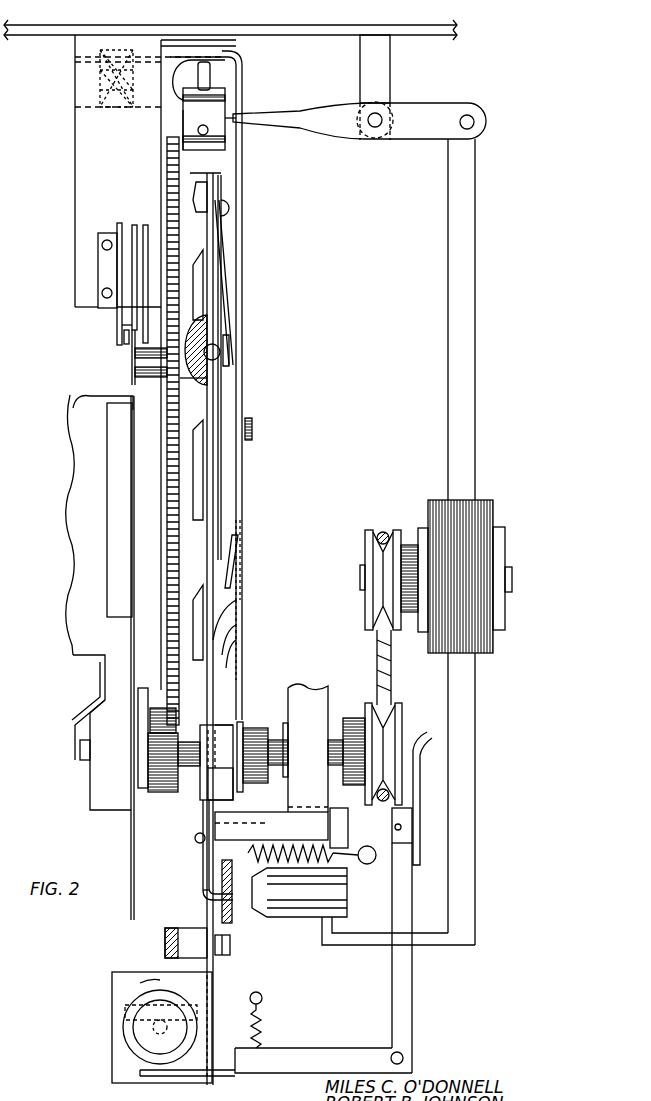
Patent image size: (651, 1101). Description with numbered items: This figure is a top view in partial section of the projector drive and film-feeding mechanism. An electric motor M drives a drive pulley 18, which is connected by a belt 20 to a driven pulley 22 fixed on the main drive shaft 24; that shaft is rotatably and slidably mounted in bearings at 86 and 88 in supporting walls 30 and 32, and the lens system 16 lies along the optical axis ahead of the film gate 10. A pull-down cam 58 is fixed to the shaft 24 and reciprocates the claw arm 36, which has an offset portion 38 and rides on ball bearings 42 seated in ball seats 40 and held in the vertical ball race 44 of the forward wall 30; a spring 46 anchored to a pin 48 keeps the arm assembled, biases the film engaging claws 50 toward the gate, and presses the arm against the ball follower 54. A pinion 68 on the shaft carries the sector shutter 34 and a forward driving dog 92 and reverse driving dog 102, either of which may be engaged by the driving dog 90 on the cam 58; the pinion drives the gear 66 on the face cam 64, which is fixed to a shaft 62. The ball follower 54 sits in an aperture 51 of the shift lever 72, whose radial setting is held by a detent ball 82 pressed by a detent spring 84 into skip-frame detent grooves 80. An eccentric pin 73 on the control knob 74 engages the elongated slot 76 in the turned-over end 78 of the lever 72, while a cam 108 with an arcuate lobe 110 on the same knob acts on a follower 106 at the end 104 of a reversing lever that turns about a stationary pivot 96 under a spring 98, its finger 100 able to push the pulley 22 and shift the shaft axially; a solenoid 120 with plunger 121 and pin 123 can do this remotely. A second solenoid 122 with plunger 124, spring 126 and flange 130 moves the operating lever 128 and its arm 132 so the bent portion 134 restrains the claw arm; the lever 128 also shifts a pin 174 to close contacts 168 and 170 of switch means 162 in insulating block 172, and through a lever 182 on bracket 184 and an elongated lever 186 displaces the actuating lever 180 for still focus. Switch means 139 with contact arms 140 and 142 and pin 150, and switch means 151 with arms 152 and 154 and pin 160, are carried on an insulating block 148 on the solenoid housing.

The flange 130 is at (127, 35).
The spring 126 is at (95, 71).
The plunger 124 is at (116, 100).
The contact 168 is at (183, 95).
The operating lever 128 is at (228, 48).
The pin 174 is at (212, 70).
The insulating block 172 is at (222, 100).
The contact 170 is at (212, 130).
The third switch means 162 is at (178, 114).
The bracket 184 is at (364, 82).
The lever 182 is at (398, 103).
The elongated lever 186 is at (448, 207).
The gear 66 is at (167, 169).
The face cam 64 is at (191, 173).
The arm 132 is at (243, 168).
The solenoid 122 is at (74, 229).
The insulating block 148 is at (132, 238).
The contact arm 142 is at (117, 318).
The switch arm 152 is at (122, 324).
The second switch means 151 is at (124, 338).
The cam engaging pin 160 is at (135, 352).
The contact arm 140 is at (135, 371).
The electrical switch means 139 is at (132, 383).
The switch arm 154 is at (153, 318).
The skip-frame detent grooves 80 is at (200, 338).
The detent ball 82 is at (220, 352).
The detent spring 84 is at (230, 360).
The cam engaging pin 150 is at (140, 379).
The shaft 62 is at (253, 430).
The supporting wall 32 is at (94, 498).
The electric motor M is at (438, 502).
The drive pulley 18 is at (366, 535).
The bent portion 134 is at (236, 566).
The aperture 51 is at (238, 596).
The claw arm 36 is at (240, 612).
The ball follower 54 is at (224, 646).
The reverse driving dog 102 is at (196, 720).
The pinion 68 is at (160, 708).
The forward wall 30 is at (301, 690).
The pull-down cam 58 is at (254, 728).
The bearing location 86 is at (286, 726).
The belt 20 is at (392, 672).
The driven pulley 22 is at (397, 712).
The finger 100 is at (420, 768).
The solenoid 120 is at (342, 810).
The pin 123 is at (402, 827).
The plunger 121 is at (397, 835).
The main drive shaft 24 is at (82, 758).
The bearing location 88 is at (92, 788).
The driving dog 90 is at (188, 770).
The forward driving dog 92 is at (202, 800).
The sector shutter 34 is at (131, 858).
The ball seats 40 is at (203, 828).
The ball bearings 42 is at (200, 842).
The offset portion 38 is at (203, 888).
The shift lever 72 is at (207, 918).
The ball race 44 is at (245, 823).
The spring 46 is at (328, 855).
The pin 48 is at (377, 860).
The lens system 16 is at (334, 896).
The actuating lever 180 is at (334, 937).
The film engaging claws 50 is at (233, 903).
The film gate 10 is at (234, 926).
The control knob 74 is at (135, 1005).
The elongated slot 76 is at (125, 1008).
The arcuate lobe 110 is at (133, 1022).
The cam 108 is at (124, 1040).
The turned-over end 78 is at (118, 1073).
The follower 106 is at (181, 1076).
The eccentric pin 73 is at (207, 992).
The spring 98 is at (259, 1012).
The end 104 is at (314, 1048).
The stationary pivot 96 is at (403, 1056).